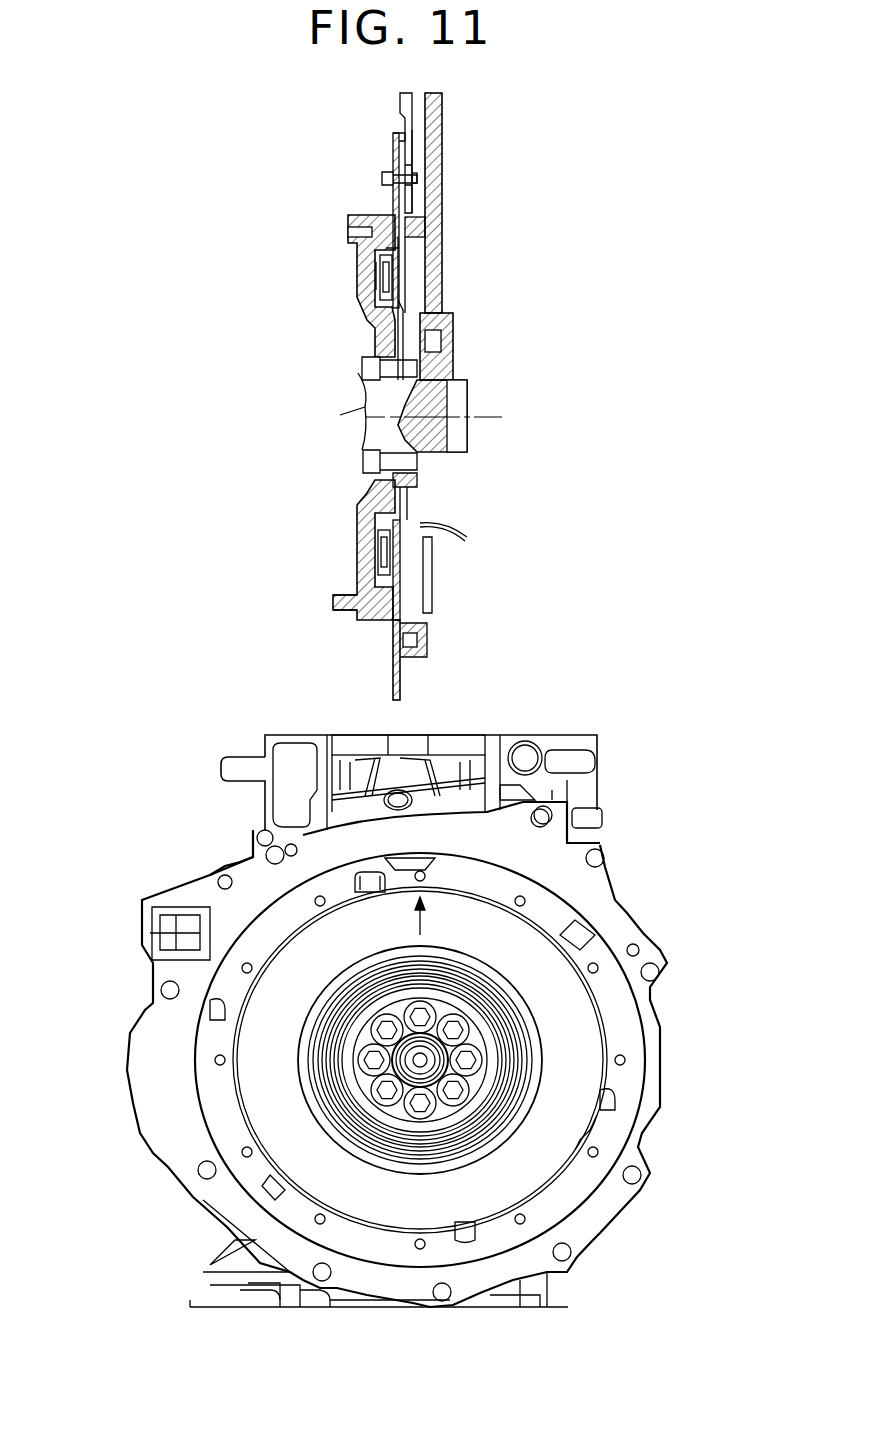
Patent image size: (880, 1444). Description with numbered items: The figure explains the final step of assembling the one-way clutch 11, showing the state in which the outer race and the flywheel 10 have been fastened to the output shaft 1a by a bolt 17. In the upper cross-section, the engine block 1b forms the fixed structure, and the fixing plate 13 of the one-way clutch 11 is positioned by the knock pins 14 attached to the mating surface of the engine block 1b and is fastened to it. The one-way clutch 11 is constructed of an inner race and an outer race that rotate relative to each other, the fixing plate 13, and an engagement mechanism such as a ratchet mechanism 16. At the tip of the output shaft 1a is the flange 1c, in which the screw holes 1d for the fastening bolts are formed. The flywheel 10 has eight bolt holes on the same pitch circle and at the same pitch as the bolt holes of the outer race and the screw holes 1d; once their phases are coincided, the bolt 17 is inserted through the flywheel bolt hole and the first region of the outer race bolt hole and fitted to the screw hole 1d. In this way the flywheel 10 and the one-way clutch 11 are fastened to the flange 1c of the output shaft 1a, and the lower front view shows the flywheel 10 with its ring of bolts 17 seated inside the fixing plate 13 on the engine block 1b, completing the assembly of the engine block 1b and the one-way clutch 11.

The output shaft 1a is at (455, 395).
The engine block 1b is at (440, 160).
The flange 1c is at (420, 485).
The screw hole 1d is at (425, 462).
The flywheel 10 is at (357, 280).
The one-way clutch 11 is at (403, 318).
The fixing plate 13 is at (405, 262).
The knock pin 14 is at (382, 178).
The ratchet mechanism 16 is at (362, 455).
The bolt 17 is at (482, 1052).